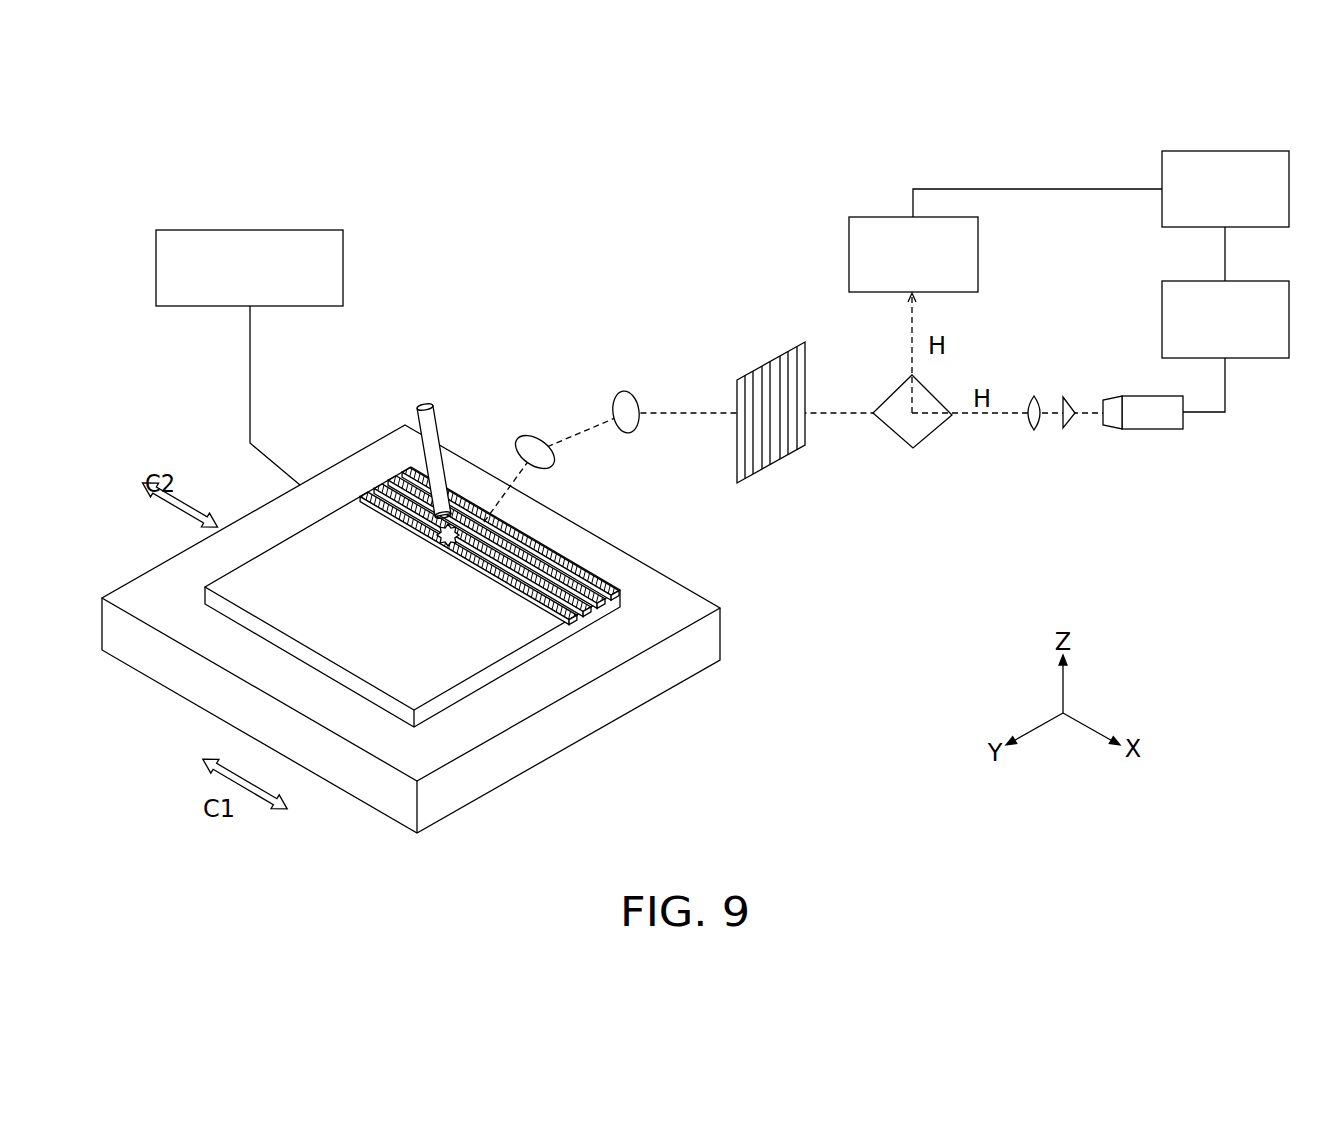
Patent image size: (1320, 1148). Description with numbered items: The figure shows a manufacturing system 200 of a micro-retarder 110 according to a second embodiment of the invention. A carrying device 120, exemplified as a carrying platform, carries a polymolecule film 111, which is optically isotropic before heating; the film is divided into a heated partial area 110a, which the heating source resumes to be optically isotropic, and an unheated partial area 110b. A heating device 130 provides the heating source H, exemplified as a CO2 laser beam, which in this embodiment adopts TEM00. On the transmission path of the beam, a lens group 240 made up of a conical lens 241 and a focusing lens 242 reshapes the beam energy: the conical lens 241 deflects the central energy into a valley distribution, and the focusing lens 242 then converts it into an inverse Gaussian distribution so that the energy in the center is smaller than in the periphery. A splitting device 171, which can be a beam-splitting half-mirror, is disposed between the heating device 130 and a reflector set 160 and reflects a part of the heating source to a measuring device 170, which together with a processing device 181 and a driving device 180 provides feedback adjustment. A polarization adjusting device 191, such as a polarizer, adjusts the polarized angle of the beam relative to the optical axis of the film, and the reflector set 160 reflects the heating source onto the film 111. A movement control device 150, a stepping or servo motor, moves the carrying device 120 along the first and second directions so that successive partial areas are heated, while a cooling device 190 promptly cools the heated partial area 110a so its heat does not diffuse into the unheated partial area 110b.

The manufacturing system 200 is at (87, 171).
The micro-retarder 110 is at (528, 653).
The heated partial area 110a is at (585, 613).
The unheated partial area 110b is at (613, 603).
The polymolecule film 111 is at (467, 660).
The carrying device 120 is at (463, 783).
The heating device 130 is at (1176, 429).
The movement control device 150 is at (345, 268).
The reflector set 160 is at (613, 387).
The measuring device 170 is at (849, 252).
The splitting device 171 is at (922, 440).
The driving device 180 is at (1162, 318).
The processing device 181 is at (1162, 212).
The cooling device 190 is at (428, 405).
The polarization adjusting device 191 is at (769, 364).
The optical module 240 is at (1049, 464).
The conical lens 241 is at (1076, 441).
The focusing lens 242 is at (1034, 432).